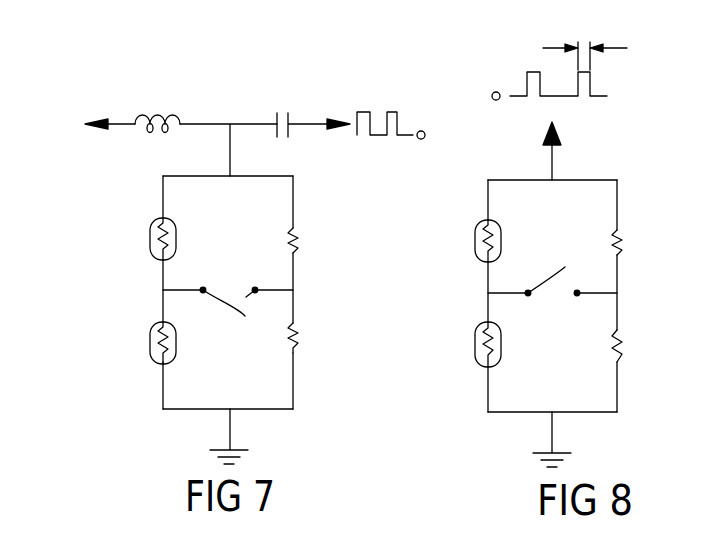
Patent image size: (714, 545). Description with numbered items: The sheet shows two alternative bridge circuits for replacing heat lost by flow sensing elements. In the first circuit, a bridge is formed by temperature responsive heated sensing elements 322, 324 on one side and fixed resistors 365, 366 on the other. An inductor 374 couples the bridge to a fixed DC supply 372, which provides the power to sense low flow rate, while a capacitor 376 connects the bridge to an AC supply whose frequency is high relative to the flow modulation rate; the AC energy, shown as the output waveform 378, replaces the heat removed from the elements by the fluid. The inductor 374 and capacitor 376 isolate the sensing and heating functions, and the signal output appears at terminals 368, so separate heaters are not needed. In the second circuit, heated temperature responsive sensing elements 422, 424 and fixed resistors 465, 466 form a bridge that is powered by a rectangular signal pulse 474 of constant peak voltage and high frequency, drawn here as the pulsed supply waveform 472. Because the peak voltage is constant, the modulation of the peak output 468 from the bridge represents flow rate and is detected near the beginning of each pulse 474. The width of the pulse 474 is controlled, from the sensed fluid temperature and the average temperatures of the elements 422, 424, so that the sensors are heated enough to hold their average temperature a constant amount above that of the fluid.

In FIG. 7, the DC supply 372 is at (55, 113).
In FIG. 7, the inductor 374 is at (155, 114).
In FIG. 7, the capacitor 376 is at (275, 119).
In FIG. 7, the output voltage waveform 378 is at (409, 108).
In FIG. 7, the temperature responsive heated sensing element 322 is at (176, 230).
In FIG. 7, the temperature responsive heated sensing element 324 is at (176, 351).
In FIG. 7, the fixed resistor 365 is at (292, 238).
In FIG. 7, the fixed resistor 366 is at (298, 332).
In FIG. 7, the terminals 368 is at (245, 316).
In FIG. 8, the output pulse waveform V+ 472 is at (500, 62).
In FIG. 8, the rectangular signal pulse 474 is at (591, 58).
In FIG. 8, the heated temperature responsive sensing element 422 is at (477, 232).
In FIG. 8, the heated temperature responsive sensing element 424 is at (476, 336).
In FIG. 8, the fixed resistor 465 is at (612, 240).
In FIG. 8, the fixed resistor 466 is at (613, 348).
In FIG. 8, the peak output 468 is at (577, 293).